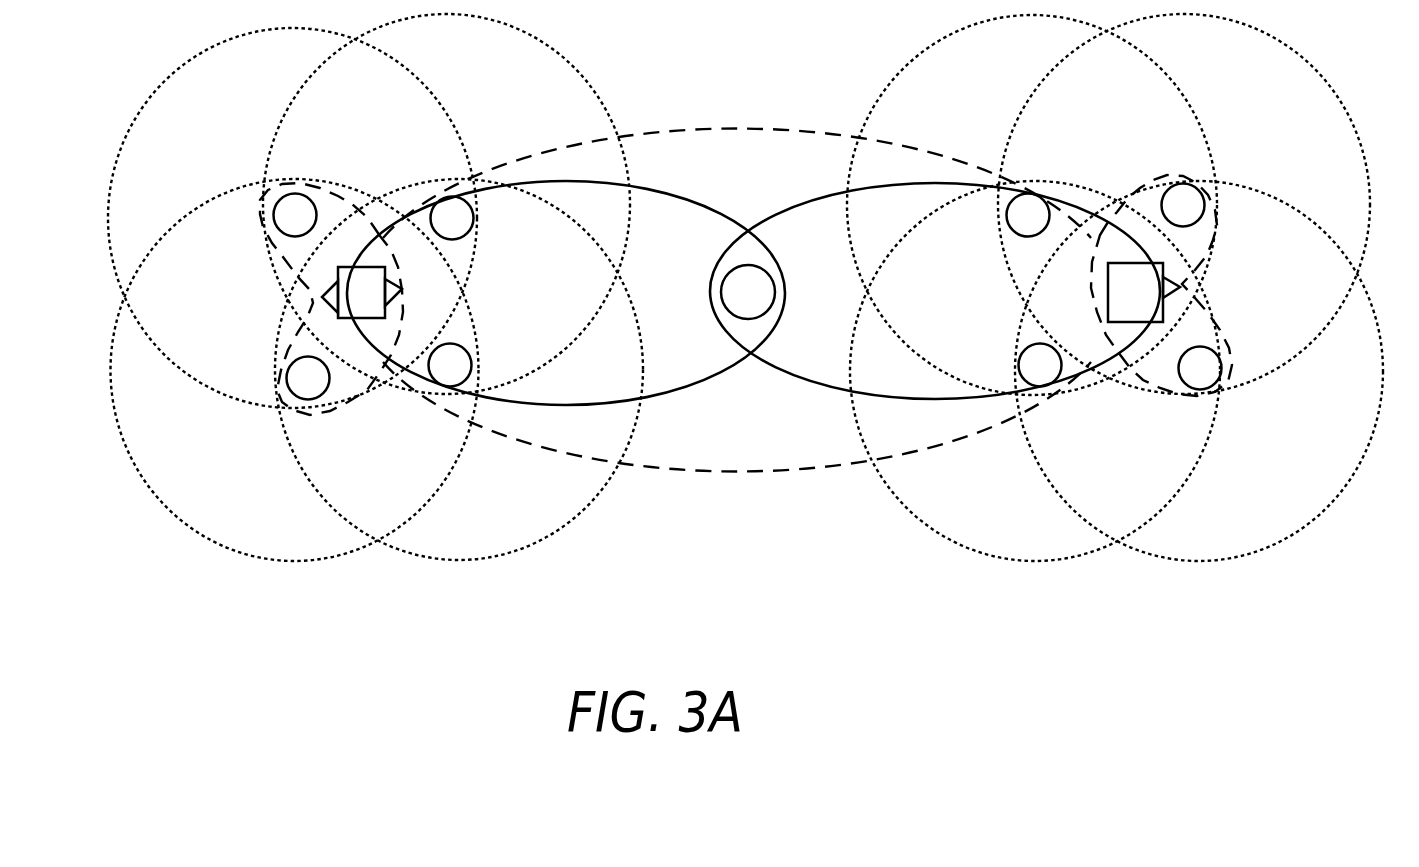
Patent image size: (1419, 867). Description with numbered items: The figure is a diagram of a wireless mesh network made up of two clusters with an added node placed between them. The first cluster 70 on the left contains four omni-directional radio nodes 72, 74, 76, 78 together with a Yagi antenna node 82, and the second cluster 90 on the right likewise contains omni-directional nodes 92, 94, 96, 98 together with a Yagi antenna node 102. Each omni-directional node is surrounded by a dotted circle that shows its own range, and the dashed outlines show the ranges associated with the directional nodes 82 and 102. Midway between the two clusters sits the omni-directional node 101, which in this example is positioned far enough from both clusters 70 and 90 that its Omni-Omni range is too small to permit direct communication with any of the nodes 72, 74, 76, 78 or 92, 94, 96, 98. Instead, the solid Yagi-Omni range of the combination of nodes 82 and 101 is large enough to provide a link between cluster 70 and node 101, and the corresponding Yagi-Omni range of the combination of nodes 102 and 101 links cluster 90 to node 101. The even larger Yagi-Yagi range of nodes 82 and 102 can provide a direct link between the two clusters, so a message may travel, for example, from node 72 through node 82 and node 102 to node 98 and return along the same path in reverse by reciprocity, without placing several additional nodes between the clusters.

The cluster 70 is at (372, 602).
The node 72 is at (440, 229).
The node 74 is at (296, 389).
The node 76 is at (438, 376).
The node 78 is at (283, 226).
The node 82 is at (350, 303).
The cluster 90 is at (1117, 610).
The node 92 is at (1171, 216).
The node 94 is at (1028, 376).
The node 96 is at (1188, 379).
The node 98 is at (1016, 226).
The node 101 is at (731, 303).
The node 102 is at (1119, 303).